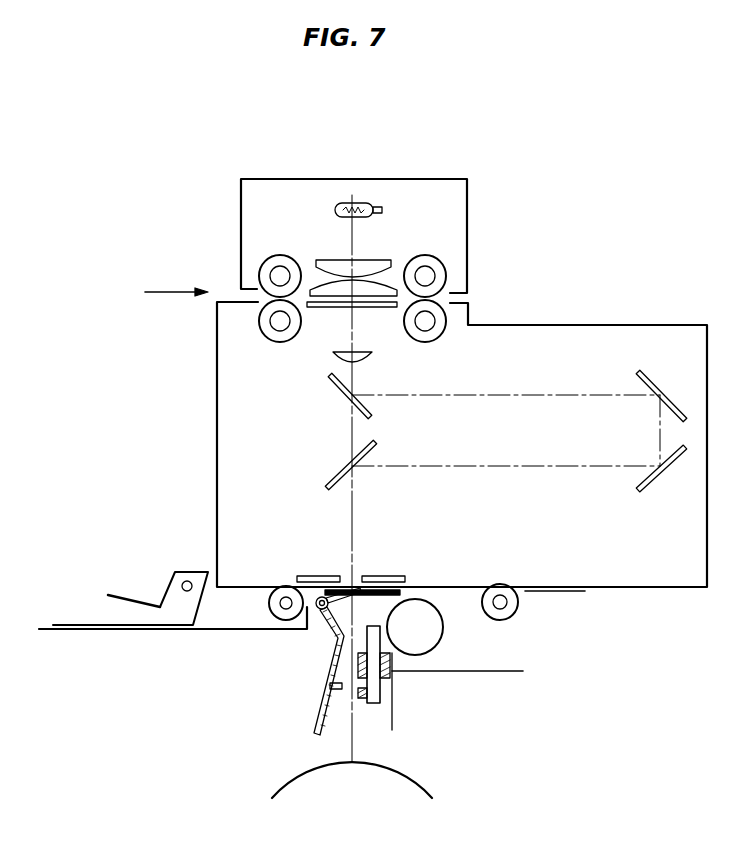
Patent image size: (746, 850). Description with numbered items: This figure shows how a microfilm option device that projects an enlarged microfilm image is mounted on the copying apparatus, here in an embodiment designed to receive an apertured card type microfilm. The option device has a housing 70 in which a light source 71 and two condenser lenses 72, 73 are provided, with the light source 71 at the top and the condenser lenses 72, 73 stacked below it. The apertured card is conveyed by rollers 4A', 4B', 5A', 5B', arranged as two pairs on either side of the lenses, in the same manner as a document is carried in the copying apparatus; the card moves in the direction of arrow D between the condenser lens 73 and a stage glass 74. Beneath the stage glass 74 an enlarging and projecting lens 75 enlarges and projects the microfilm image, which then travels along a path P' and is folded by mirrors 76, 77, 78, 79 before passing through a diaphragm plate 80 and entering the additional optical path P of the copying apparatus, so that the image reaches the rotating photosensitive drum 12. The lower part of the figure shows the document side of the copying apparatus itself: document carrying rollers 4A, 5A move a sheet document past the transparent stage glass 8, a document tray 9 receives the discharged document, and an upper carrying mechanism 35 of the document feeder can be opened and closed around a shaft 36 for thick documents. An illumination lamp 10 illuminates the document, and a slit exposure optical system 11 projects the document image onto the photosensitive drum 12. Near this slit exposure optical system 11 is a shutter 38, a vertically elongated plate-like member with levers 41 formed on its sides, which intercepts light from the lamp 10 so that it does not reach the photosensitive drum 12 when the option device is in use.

The housing 70 is at (293, 179).
The light source 71 is at (363, 205).
The condenser lens 72 is at (370, 262).
The condenser lens 73 is at (392, 285).
The stage glass 74 is at (323, 308).
The enlarging and projecting lens 75 is at (371, 358).
The mirror 76 is at (356, 412).
The mirror 77 is at (661, 390).
The mirror 78 is at (668, 470).
The mirror 79 is at (350, 465).
The diaphragm plate 80 is at (333, 576).
The roller 4B' is at (247, 258).
The roller 4A' is at (264, 341).
The roller 5B' is at (461, 276).
The roller 5A' is at (447, 338).
The document carrying roller 4A is at (523, 610).
The document carrying roller 5A is at (262, 627).
The transparent glass plate 8 is at (385, 598).
The document tray 9 is at (112, 632).
The illumination lamp 10 is at (436, 636).
The slit exposure optical system 11 is at (380, 693).
The photosensitive drum 12 is at (397, 770).
The upper carrying mechanism 35 is at (120, 595).
The shaft 36 is at (187, 580).
The shutter 38 is at (333, 652).
The lever 41 is at (322, 612).
The direction of original transport D is at (177, 292).
The additional optical path P is at (336, 740).
The light path P' is at (332, 521).